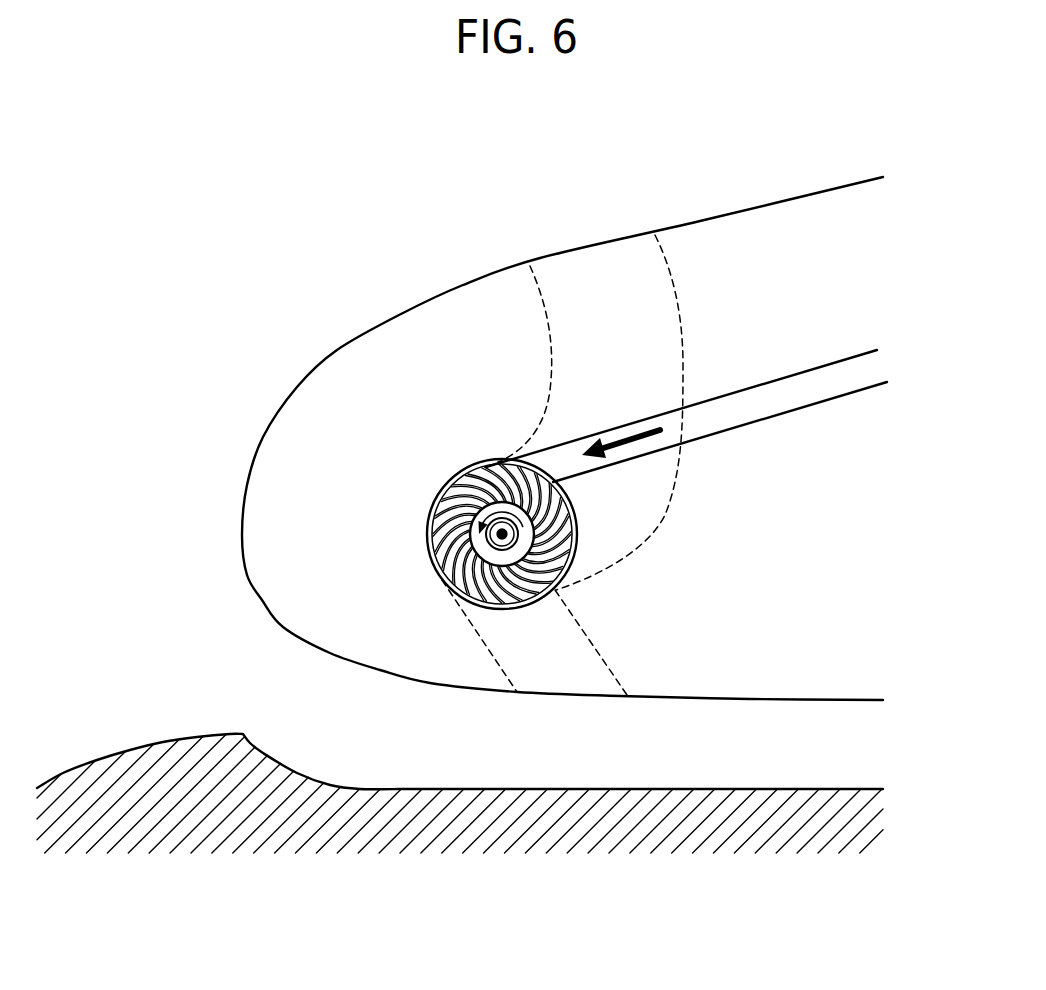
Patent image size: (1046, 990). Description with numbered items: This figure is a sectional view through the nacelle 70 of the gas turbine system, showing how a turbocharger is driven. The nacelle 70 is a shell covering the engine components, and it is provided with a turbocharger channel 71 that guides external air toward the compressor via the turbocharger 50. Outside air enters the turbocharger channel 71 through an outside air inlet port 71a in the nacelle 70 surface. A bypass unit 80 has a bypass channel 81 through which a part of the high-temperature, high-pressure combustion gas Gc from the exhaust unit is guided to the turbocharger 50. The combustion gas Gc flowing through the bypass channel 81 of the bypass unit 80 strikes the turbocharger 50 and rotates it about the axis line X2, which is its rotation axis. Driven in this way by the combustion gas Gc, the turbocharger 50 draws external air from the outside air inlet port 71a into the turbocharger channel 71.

The nacelle 70 is at (337, 350).
The outside air inlet port 71a is at (531, 267).
The turbocharger channel 71 is at (678, 330).
The bypass unit 80 is at (825, 367).
The bypass channel 81 is at (739, 396).
The turbocharger 50 is at (449, 491).
The combustion gas Gc is at (637, 435).
The axis line X2 is at (502, 534).